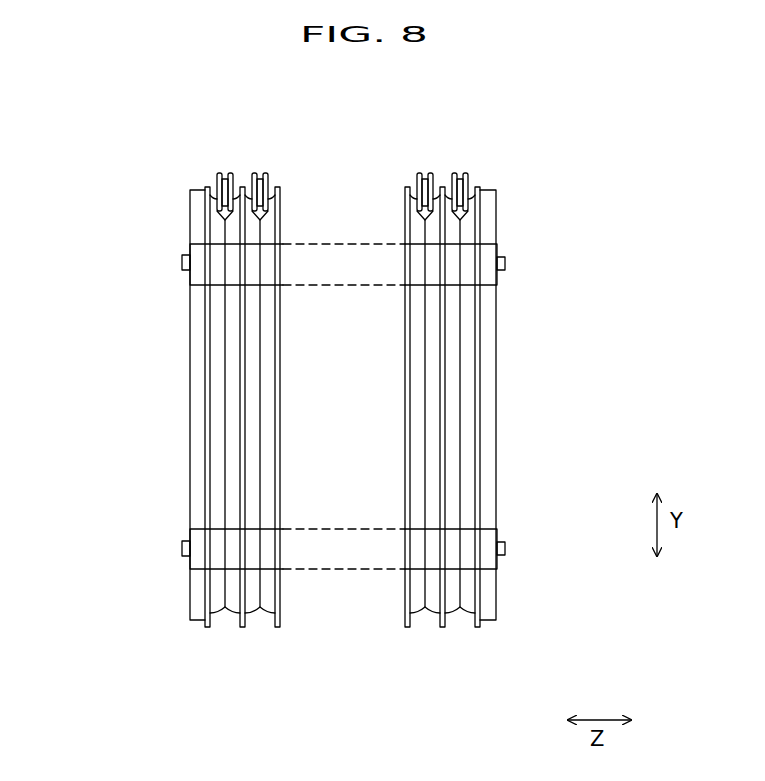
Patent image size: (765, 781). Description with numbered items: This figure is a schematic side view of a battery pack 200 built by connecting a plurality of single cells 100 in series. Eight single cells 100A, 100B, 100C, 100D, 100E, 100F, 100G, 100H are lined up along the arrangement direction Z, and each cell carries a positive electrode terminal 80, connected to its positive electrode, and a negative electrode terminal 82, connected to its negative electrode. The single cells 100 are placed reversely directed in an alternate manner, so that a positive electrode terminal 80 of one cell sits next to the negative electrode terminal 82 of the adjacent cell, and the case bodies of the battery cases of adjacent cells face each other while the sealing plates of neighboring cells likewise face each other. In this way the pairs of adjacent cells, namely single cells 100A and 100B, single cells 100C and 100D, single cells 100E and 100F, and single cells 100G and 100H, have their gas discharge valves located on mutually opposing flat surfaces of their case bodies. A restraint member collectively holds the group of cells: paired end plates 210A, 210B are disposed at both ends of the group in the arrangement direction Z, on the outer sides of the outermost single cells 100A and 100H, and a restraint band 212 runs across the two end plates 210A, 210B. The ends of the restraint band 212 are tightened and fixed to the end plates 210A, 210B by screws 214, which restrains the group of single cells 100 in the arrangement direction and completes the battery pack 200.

The battery pack 200 is at (550, 146).
The end plate 210A is at (496, 218).
The end plate 210B is at (190, 220).
The restraint band 212 is at (490, 274).
The screw 214 is at (182, 263).
The positive electrode terminal 80 is at (217, 170).
The negative electrode terminal 82 is at (230, 171).
The single cell 100 is at (334, 466).
The single cell 100A is at (213, 628).
The single cell 100B is at (232, 628).
The single cell 100C is at (250, 628).
The single cell 100D is at (270, 628).
The single cell 100E is at (420, 628).
The single cell 100F is at (433, 628).
The single cell 100G is at (448, 628).
The single cell 100H is at (470, 628).